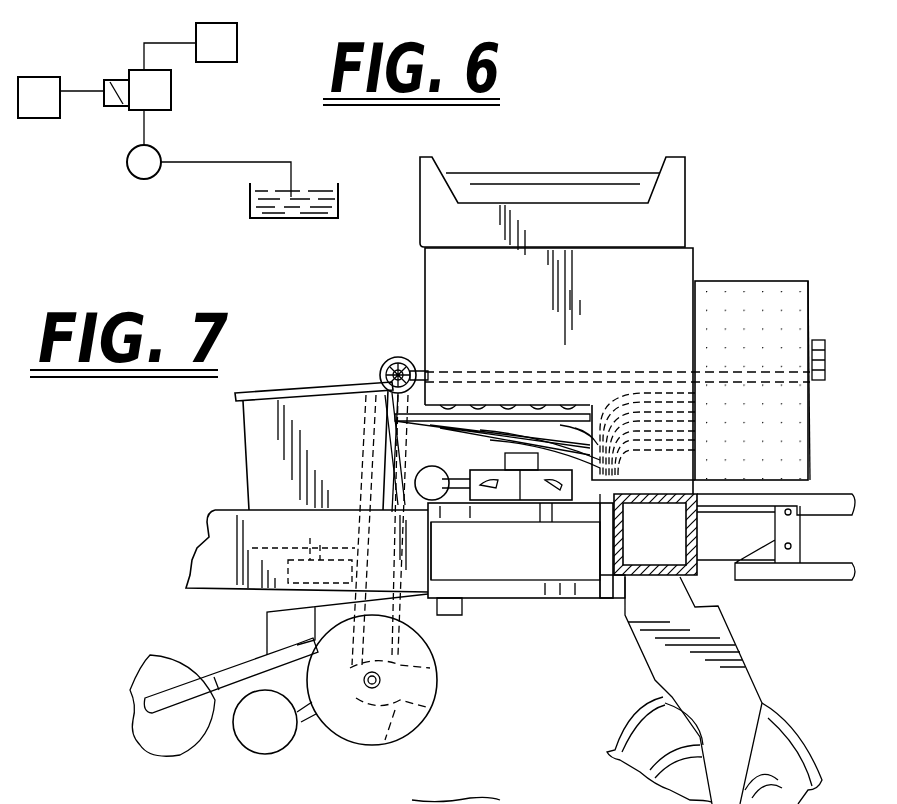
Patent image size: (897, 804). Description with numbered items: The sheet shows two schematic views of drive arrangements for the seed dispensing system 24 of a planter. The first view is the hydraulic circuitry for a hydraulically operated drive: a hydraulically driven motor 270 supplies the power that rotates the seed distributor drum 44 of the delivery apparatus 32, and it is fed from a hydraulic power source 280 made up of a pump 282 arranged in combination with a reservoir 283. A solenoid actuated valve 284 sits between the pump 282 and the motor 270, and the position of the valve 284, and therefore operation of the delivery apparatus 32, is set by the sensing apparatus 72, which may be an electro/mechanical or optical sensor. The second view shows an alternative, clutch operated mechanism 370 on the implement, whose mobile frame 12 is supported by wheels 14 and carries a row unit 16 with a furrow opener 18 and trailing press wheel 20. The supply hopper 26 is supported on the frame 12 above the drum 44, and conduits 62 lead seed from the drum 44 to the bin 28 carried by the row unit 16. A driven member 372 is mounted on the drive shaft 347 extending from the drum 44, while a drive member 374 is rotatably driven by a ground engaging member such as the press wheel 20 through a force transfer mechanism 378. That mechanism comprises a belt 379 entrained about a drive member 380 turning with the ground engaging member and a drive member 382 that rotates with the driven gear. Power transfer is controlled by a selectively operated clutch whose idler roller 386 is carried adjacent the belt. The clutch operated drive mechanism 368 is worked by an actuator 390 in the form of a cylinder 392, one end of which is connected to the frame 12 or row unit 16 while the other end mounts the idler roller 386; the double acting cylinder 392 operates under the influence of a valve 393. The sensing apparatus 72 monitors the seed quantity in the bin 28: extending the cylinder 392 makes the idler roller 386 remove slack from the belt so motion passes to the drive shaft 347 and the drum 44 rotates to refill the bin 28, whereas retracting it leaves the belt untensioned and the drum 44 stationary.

In FIG. 6, the sensing apparatus 72 is at (53, 108).
In FIG. 6, the hydraulically driven motor 270 is at (237, 53).
In FIG. 6, the solenoid actuated valve 284 is at (171, 98).
In FIG. 6, the hydraulic power source 280 is at (118, 170).
In FIG. 6, the pump 282 is at (159, 160).
In FIG. 6, the reservoir 283 is at (345, 170).
In FIG. 7, the frame 12 is at (718, 585).
In FIG. 7, the wheels 14 is at (628, 738).
In FIG. 7, the row unit 16 is at (188, 528).
In FIG. 7, the furrow opener 18 is at (405, 722).
In FIG. 7, the press wheel 20 is at (283, 735).
In FIG. 7, the seed dispensing system 24 is at (770, 265).
In FIG. 7, the supply hopper 26 is at (418, 295).
In FIG. 7, the bin 28 is at (283, 388).
In FIG. 7, the delivery apparatus 32 is at (823, 320).
In FIG. 7, the seed distributor drum 44 is at (806, 449).
In FIG. 7, the conduit 62 is at (495, 428).
In FIG. 7, the drive shaft 347 is at (640, 372).
In FIG. 7, the clutch operated drive mechanism 368 is at (437, 568).
In FIG. 7, the clutch operated mechanism 370 is at (438, 550).
In FIG. 7, the driven member 372 is at (416, 372).
In FIG. 7, the drive member 374 is at (384, 370).
In FIG. 7, the force transfer mechanism 378 is at (413, 597).
In FIG. 7, the belt 379 is at (440, 674).
In FIG. 7, the drive member 380 is at (432, 522).
In FIG. 7, the drive member 382 is at (394, 356).
In FIG. 7, the idler roller 386 is at (418, 470).
In FIG. 7, the actuator 390 is at (544, 508).
In FIG. 7, the cylinder 392 is at (565, 498).
In FIG. 7, the valve 393 is at (528, 460).